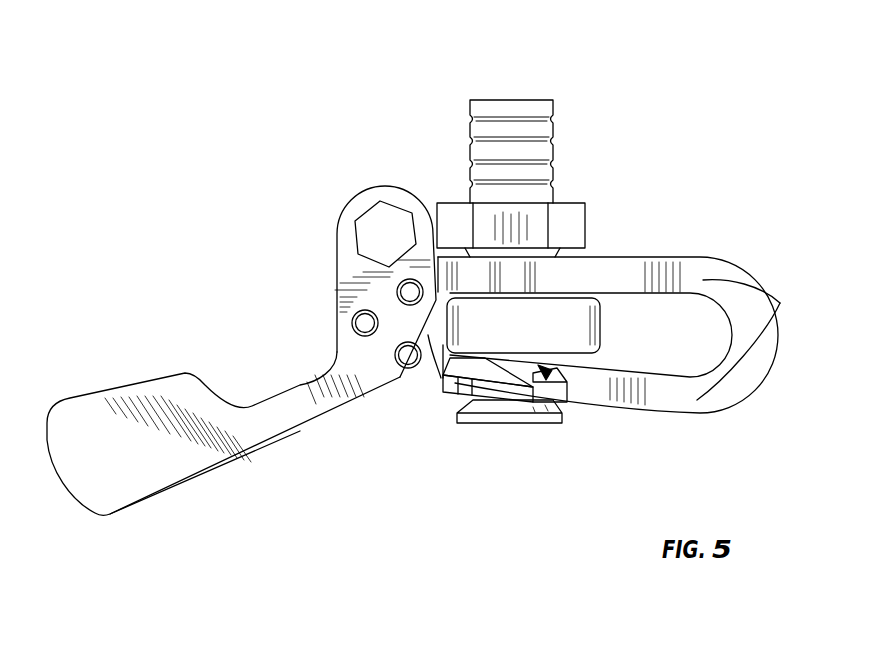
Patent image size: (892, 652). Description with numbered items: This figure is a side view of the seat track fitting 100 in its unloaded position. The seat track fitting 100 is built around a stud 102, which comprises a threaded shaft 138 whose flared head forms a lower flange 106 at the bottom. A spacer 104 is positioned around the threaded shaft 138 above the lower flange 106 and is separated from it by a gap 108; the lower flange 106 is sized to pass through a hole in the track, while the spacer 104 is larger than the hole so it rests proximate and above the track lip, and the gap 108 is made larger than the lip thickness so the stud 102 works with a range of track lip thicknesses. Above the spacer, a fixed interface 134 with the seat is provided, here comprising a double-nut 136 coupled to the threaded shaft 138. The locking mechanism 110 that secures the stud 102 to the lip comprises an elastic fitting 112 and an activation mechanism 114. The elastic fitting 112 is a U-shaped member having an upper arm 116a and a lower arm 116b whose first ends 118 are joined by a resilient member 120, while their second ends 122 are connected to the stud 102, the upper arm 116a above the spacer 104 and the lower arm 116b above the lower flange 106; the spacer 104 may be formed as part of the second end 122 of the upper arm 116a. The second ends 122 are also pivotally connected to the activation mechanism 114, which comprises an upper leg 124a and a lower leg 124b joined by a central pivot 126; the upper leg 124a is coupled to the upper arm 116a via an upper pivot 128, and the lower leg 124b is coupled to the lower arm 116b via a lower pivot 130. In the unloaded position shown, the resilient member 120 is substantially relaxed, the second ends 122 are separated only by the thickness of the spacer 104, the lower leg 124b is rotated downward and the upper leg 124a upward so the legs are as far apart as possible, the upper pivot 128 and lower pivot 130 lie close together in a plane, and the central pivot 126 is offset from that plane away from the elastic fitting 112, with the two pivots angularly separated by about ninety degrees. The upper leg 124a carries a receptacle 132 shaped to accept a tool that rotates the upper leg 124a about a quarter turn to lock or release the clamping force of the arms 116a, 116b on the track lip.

The seat track fitting 100 is at (143, 117).
The stud 102 is at (527, 107).
The spacer 104 is at (497, 330).
The lower flange 106 is at (515, 408).
The gap 108 is at (550, 373).
The locking mechanism 110 is at (283, 272).
The elastic fitting 112 is at (747, 400).
The activation mechanism 114 is at (85, 455).
The upper arm 116a is at (635, 265).
The lower arm 116b is at (660, 400).
The first end 118 is at (780, 303).
The resilient member 120 is at (762, 353).
The second end 122 is at (440, 330).
The upper leg 124a is at (362, 208).
The lower leg 124b is at (172, 467).
The central pivot 126 is at (352, 320).
The upper pivot 128 is at (398, 289).
The lower pivot 130 is at (395, 354).
The receptacle 132 is at (396, 225).
The fixed interface 134 is at (572, 215).
The double-nut 136 is at (490, 225).
The threaded shaft 138 is at (500, 127).